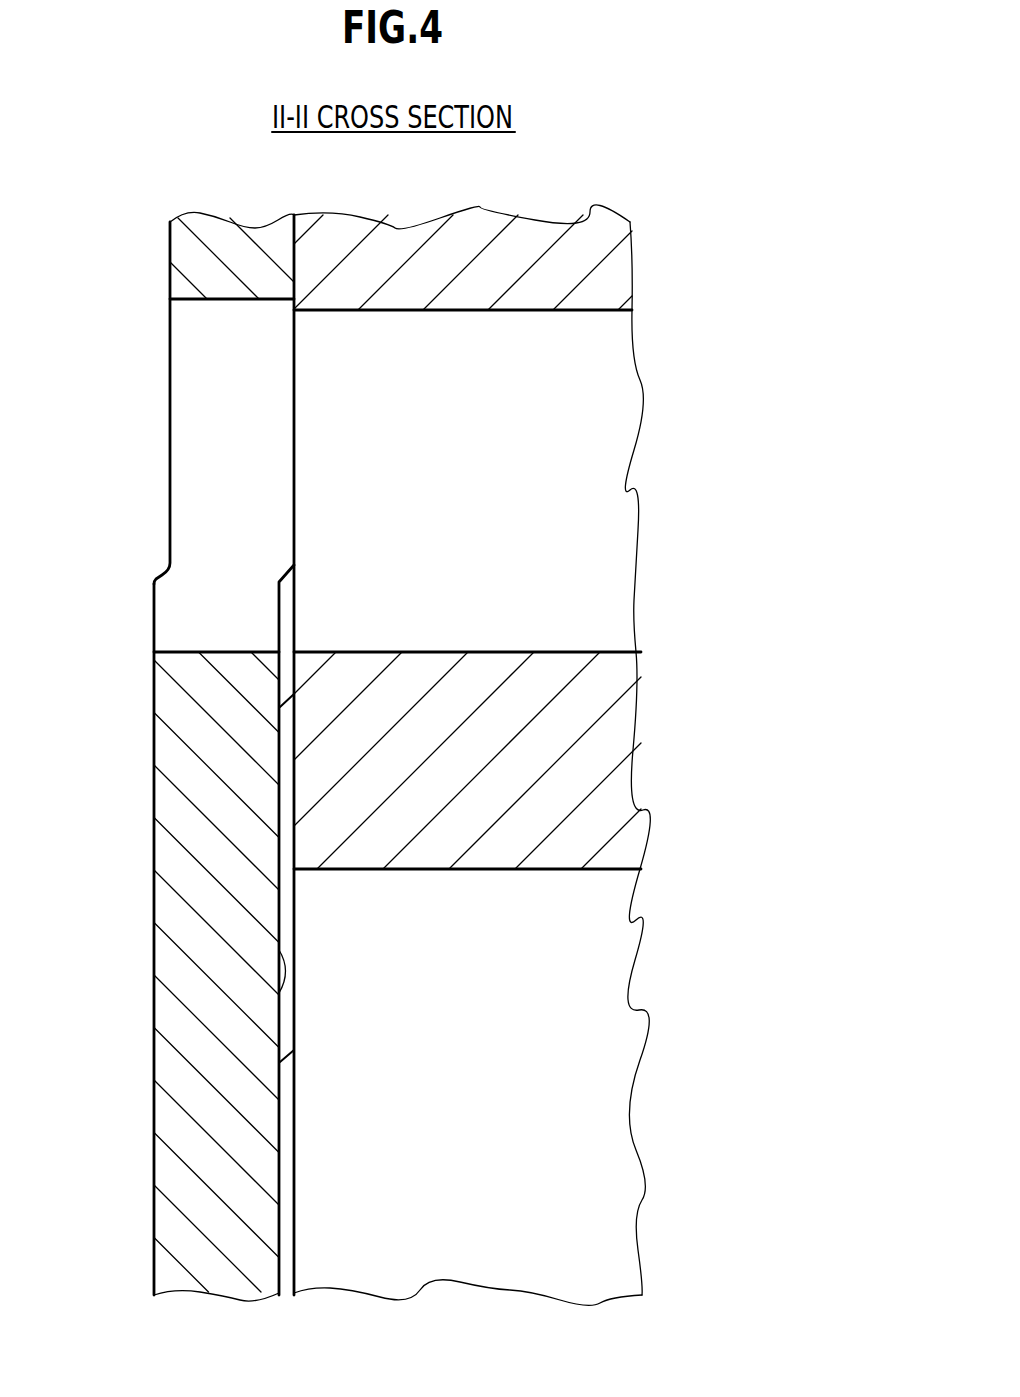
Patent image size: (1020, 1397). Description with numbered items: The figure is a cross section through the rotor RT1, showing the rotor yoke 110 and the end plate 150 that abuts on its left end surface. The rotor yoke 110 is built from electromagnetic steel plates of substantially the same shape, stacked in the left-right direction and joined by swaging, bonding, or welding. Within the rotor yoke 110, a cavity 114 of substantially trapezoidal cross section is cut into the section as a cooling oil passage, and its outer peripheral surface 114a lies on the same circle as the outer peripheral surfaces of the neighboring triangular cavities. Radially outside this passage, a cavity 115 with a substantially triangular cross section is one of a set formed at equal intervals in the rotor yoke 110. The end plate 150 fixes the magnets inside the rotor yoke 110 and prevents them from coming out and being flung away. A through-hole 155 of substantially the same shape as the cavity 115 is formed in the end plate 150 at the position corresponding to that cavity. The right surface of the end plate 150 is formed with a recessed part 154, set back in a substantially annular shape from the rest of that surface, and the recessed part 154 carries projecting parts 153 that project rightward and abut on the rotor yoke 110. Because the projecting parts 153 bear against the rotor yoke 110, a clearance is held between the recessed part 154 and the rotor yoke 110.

The through-hole 155 is at (190, 389).
The end plate 150 is at (178, 785).
The projecting part 153 is at (288, 890).
The recessed part 154 is at (282, 990).
The cavity 115 is at (588, 497).
The rotor yoke 110 is at (597, 768).
The outer peripheral surface 114a is at (590, 871).
The cavity 114 is at (617, 1008).
The rotor RT1 is at (687, 296).